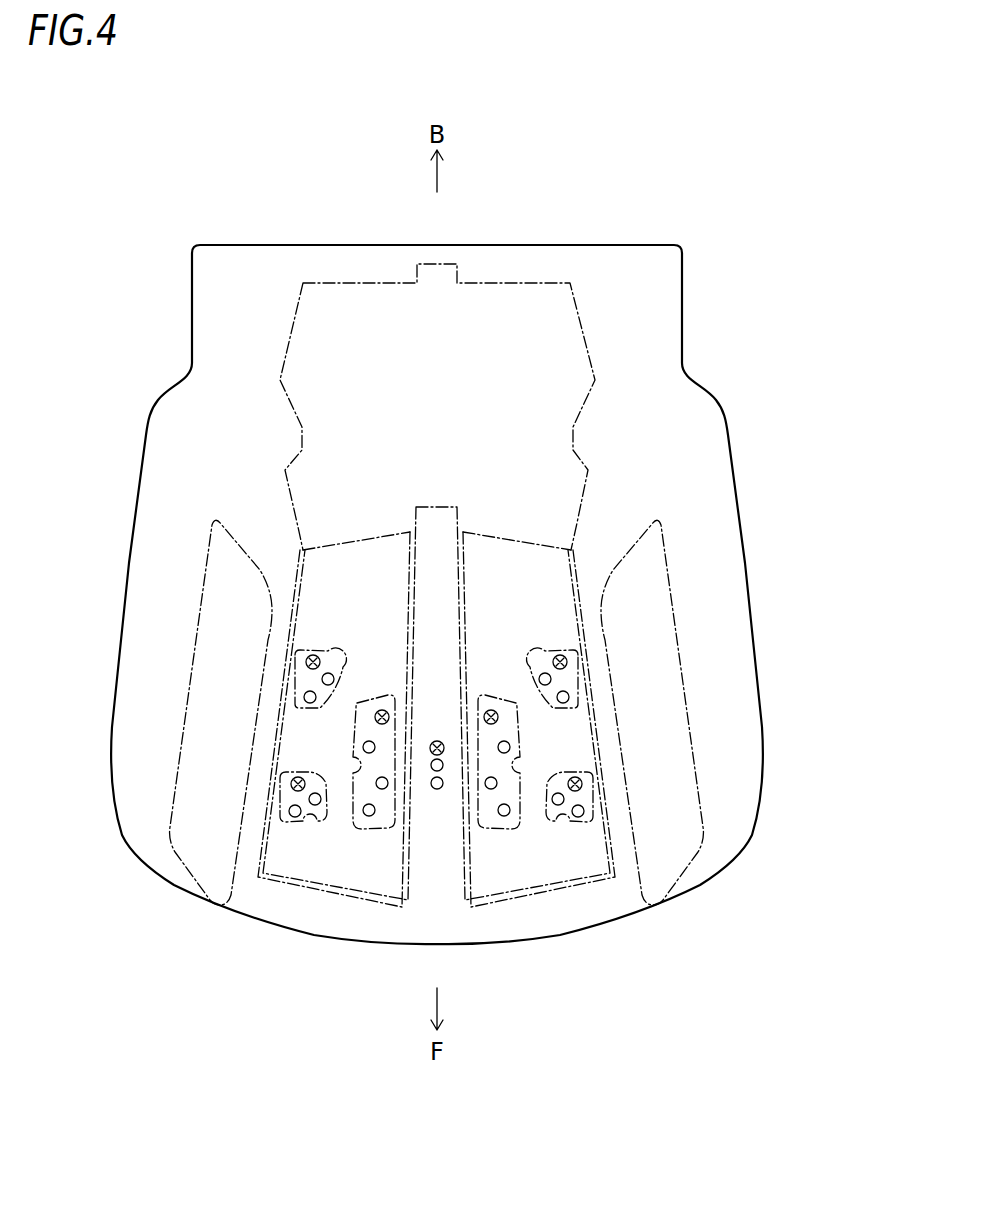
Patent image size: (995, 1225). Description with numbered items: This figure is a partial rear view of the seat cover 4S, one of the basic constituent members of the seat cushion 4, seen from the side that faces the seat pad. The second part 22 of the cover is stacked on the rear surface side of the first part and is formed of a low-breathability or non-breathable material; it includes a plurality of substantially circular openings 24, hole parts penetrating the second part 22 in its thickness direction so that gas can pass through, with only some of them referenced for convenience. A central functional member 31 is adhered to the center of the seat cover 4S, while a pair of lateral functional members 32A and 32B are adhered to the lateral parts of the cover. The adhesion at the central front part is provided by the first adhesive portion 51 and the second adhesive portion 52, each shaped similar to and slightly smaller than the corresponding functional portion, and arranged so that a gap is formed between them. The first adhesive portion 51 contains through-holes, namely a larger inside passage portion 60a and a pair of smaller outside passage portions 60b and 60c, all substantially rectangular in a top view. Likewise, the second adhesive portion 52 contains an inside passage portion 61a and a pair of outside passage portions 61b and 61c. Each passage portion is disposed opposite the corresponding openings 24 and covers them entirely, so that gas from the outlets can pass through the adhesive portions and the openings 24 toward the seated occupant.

The seat cushion 4 is at (437, 538).
The seat cover 4S is at (641, 206).
The second part 22 is at (661, 473).
The openings 24 is at (306, 663).
The central functional member 31 is at (340, 903).
The lateral functional member 32A is at (697, 858).
The lateral functional member 32B is at (180, 858).
The first adhesive portion 51 is at (518, 557).
The second adhesive portion 52 is at (355, 557).
The inside passage portion 60a is at (521, 758).
The outside passage portion 60b is at (530, 665).
The outside passage portion 60c is at (565, 822).
The inside passage portion 61a is at (352, 758).
The outside passage portion 61b is at (343, 665).
The outside passage portion 61c is at (308, 822).